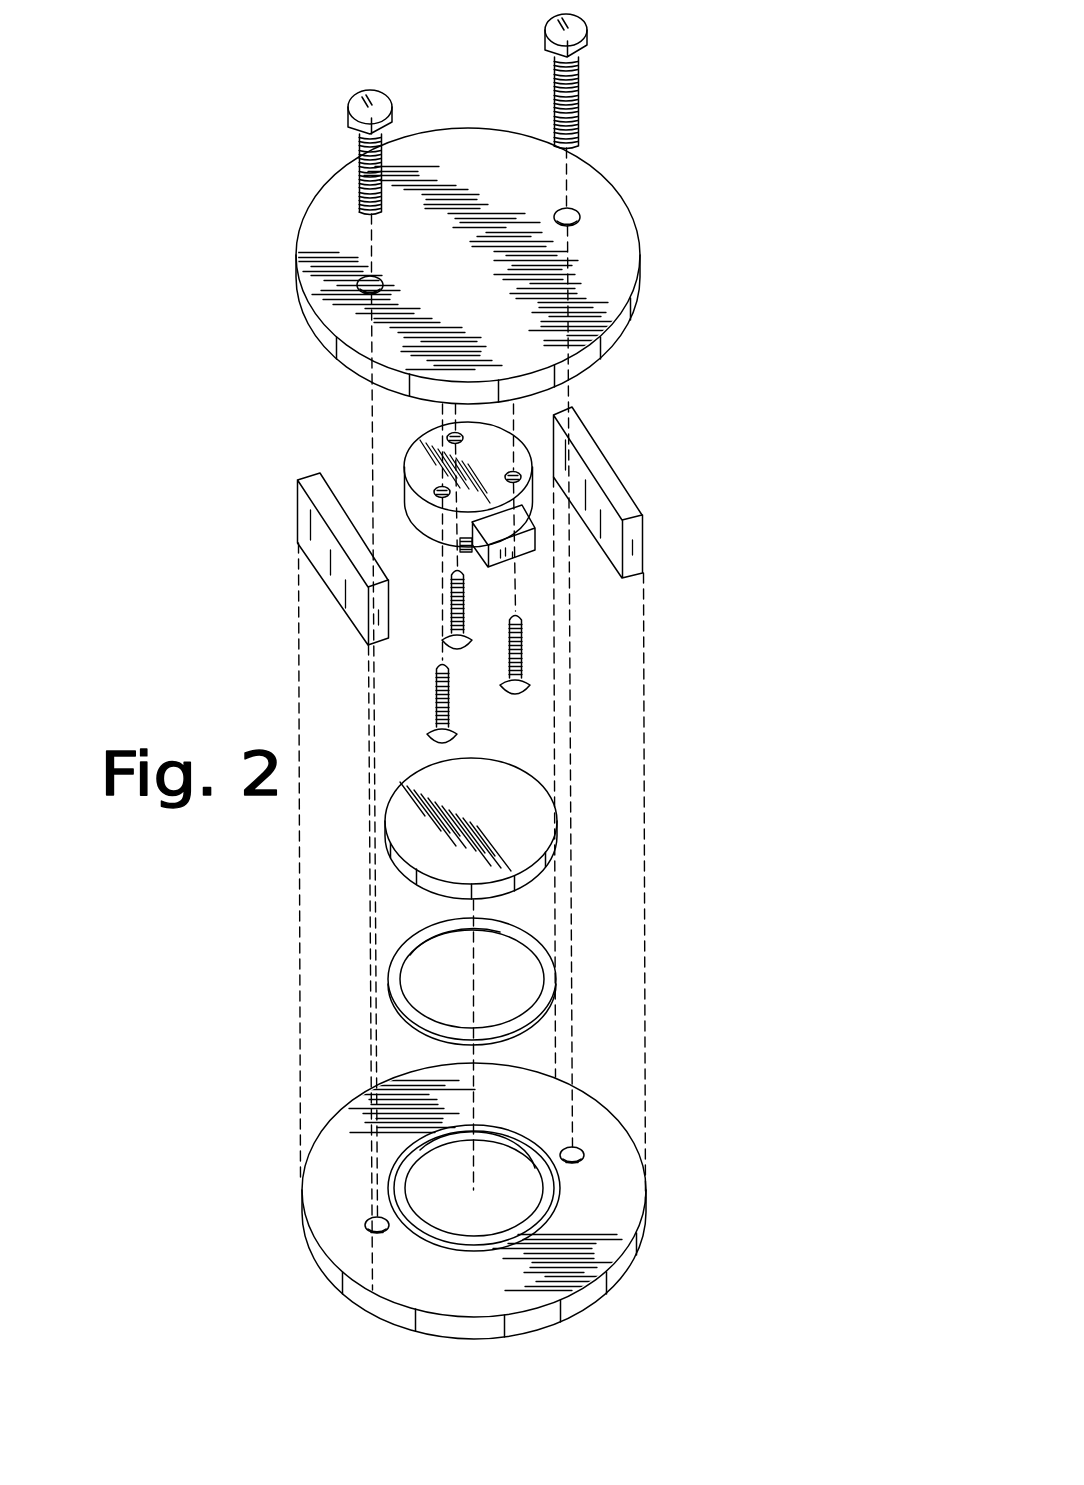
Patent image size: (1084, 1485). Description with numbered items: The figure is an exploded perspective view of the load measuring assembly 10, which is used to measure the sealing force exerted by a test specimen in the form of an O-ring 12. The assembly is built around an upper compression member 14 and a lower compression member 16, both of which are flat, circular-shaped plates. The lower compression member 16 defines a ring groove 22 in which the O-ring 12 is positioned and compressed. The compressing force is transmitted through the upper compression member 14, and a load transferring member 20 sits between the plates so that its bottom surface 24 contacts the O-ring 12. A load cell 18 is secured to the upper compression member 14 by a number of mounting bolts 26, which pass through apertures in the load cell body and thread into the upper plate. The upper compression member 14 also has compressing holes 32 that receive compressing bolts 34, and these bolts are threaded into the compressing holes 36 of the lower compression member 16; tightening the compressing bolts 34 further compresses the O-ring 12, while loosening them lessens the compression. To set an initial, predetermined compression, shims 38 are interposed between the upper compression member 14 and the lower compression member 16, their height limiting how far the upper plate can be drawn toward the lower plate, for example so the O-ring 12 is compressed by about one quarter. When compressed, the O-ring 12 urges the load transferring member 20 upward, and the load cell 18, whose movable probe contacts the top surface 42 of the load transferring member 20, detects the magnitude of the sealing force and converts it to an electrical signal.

The load measuring assembly 10 is at (752, 103).
The O-ring 12 is at (550, 1000).
The upper compression member 14 is at (628, 250).
The lower compression member 16 is at (630, 1200).
The load cell 18 is at (513, 423).
The load transferring member 20 is at (537, 809).
The ring groove 22 is at (556, 1198).
The bottom surface 24 is at (562, 805).
The mounting bolts 26 is at (466, 598).
The compressing holes 32 is at (575, 215).
The compressing bolts 34 is at (378, 100).
The compressing holes 36 is at (585, 1150).
The shims 38 is at (320, 478).
The top surface 42 is at (500, 772).